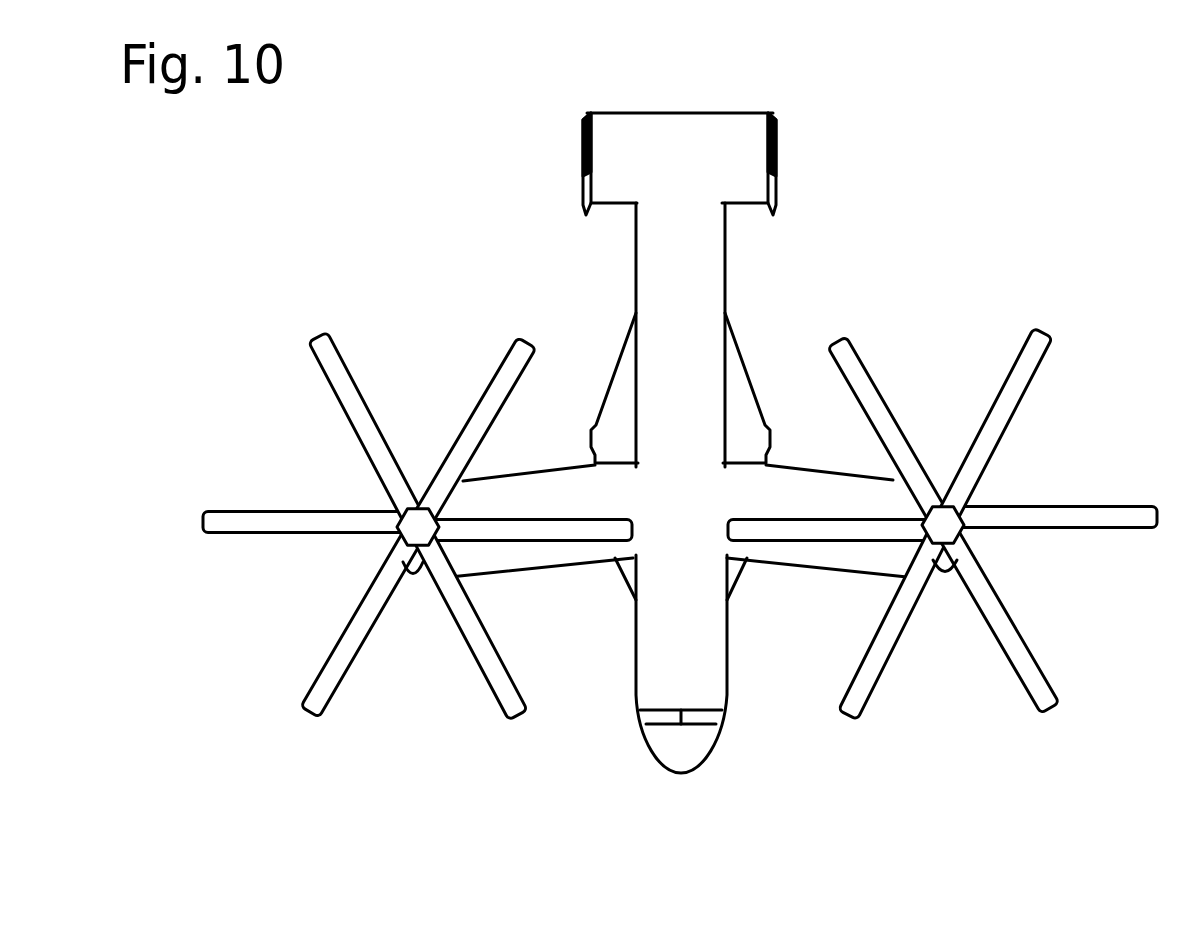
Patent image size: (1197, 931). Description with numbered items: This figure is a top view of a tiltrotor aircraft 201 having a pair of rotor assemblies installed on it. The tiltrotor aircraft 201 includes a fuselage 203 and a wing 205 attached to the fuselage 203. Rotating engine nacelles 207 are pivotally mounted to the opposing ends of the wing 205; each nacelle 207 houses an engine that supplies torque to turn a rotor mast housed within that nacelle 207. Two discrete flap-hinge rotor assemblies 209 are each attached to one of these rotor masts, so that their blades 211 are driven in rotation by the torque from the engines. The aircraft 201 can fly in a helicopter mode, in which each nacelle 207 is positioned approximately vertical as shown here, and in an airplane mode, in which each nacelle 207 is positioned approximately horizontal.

The tiltrotor aircraft 201 is at (910, 212).
The fuselage 203 is at (635, 264).
The wing 205 is at (502, 562).
The rotating engine nacelle 207 is at (948, 582).
The flap-hinge rotor assembly 209 is at (382, 435).
The blade 211 is at (263, 523).